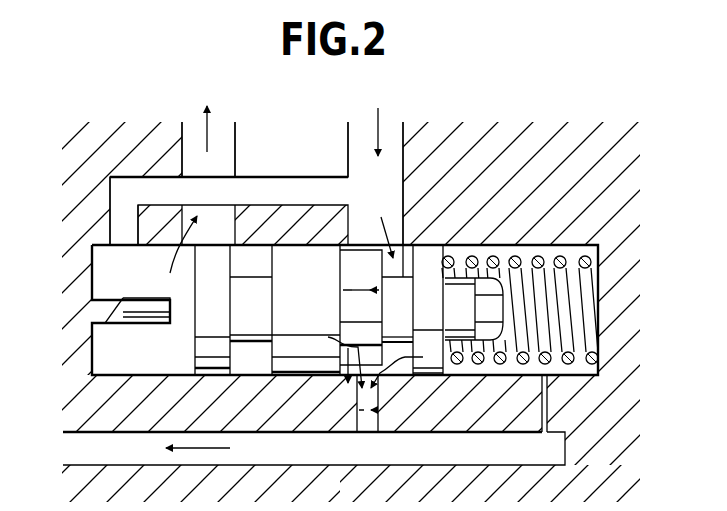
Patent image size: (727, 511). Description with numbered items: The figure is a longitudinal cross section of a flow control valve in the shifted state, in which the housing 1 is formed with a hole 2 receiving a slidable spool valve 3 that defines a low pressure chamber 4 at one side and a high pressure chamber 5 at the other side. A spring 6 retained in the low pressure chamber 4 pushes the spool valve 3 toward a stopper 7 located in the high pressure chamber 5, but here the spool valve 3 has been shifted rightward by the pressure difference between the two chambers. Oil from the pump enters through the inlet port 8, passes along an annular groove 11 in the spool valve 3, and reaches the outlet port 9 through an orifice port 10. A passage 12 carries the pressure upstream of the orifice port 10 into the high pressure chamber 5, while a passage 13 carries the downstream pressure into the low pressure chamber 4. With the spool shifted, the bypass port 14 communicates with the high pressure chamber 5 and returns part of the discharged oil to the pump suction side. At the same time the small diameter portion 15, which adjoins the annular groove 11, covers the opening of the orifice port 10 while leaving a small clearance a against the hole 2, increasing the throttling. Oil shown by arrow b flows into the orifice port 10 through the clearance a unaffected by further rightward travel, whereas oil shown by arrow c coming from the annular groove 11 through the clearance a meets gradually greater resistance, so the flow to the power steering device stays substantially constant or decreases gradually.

The housing 1 is at (513, 150).
The hole 2 is at (548, 250).
The spool valve 3 is at (192, 346).
The low pressure chamber 4 is at (576, 323).
The high pressure chamber 5 is at (112, 350).
The spring 6 is at (512, 252).
The stopper 7 is at (135, 298).
The inlet port 8 is at (393, 160).
The outlet port 9 is at (281, 447).
The orifice port 10 is at (378, 402).
The annular groove 11 is at (407, 239).
The passage 12 is at (155, 186).
The passage 13 is at (549, 408).
The bypass port 14 is at (222, 150).
The small diameter portion 15 is at (352, 268).
The clearance a is at (339, 373).
The arrow b is at (337, 353).
The arrow c is at (403, 366).